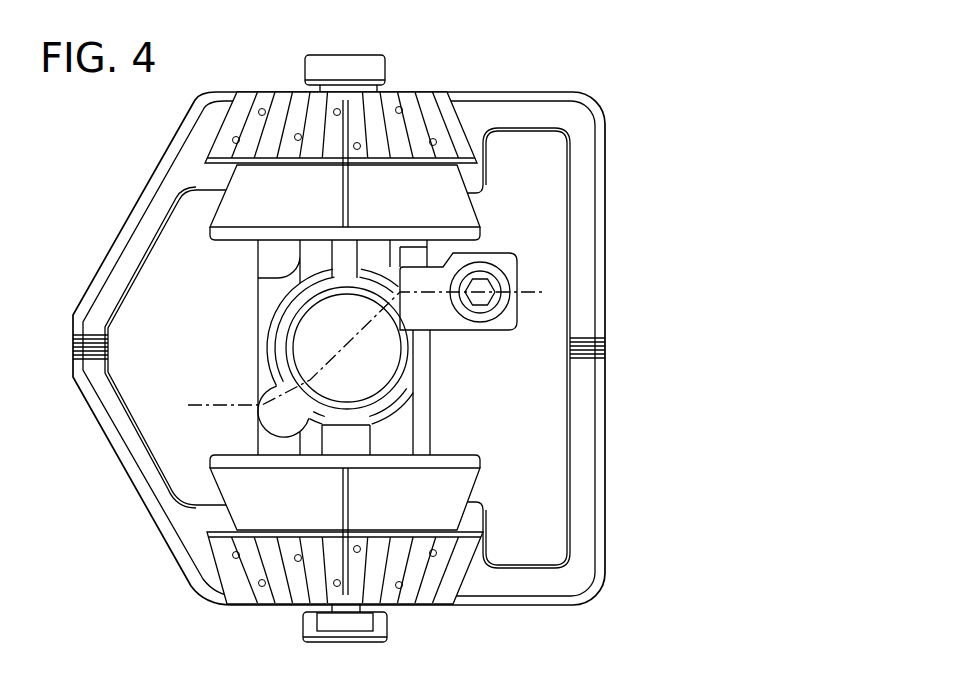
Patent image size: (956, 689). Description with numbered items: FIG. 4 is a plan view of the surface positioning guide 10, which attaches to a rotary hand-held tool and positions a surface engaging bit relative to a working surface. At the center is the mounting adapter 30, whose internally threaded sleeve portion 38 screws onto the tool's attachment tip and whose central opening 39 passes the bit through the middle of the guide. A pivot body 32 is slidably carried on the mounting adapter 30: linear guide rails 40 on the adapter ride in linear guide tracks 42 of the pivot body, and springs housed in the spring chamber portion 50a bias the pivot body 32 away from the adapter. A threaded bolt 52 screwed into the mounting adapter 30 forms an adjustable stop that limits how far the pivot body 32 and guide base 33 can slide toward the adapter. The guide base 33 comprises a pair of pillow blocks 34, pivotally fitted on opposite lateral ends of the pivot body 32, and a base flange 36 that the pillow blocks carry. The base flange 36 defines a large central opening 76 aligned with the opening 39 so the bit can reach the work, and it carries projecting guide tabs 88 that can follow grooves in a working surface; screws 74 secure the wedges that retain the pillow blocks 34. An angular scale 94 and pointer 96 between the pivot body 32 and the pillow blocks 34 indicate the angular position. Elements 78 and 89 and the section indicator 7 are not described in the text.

The surface positioning guide 10 is at (648, 137).
The mounting adapter 30 is at (270, 347).
The pivot body 32 is at (250, 278).
The guide base 33 is at (226, 612).
The pillow blocks 34 is at (272, 97).
The base flange 36 is at (585, 257).
The threaded sleeve portion 38 is at (285, 332).
The central opening 39 is at (325, 324).
The linear guide rails 40 is at (344, 250).
The linear guide tracks 42 is at (360, 256).
The spring chamber portion 50a is at (280, 396).
The threaded bolt 52 is at (490, 275).
The screws 74 is at (354, 79).
The central opening 76 is at (542, 506).
The frame side wall 78 is at (133, 208).
The guide tabs 88 is at (600, 350).
The recess 89 is at (321, 622).
The angular scale 94 is at (418, 98).
The pointer 96 is at (229, 183).
The section line 7- 7 is at (543, 319).